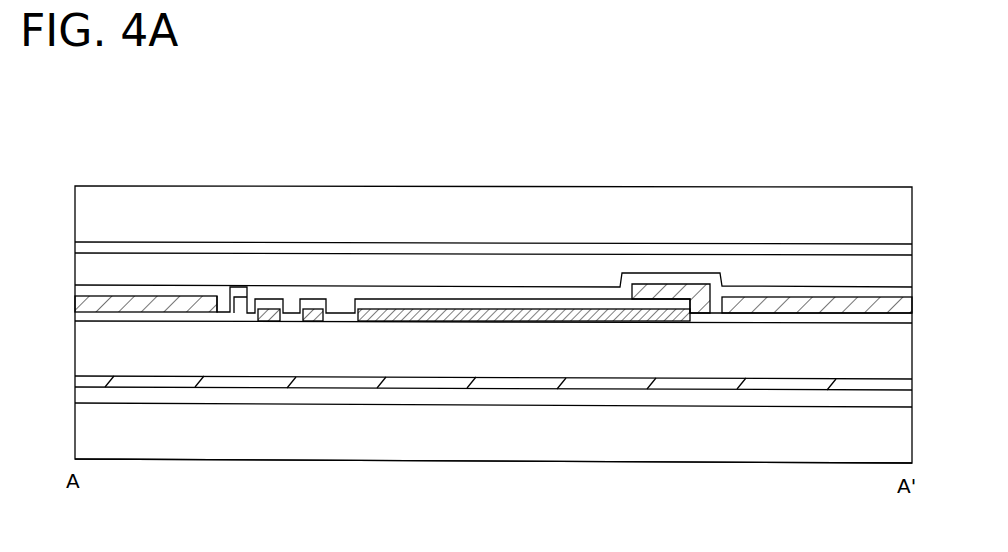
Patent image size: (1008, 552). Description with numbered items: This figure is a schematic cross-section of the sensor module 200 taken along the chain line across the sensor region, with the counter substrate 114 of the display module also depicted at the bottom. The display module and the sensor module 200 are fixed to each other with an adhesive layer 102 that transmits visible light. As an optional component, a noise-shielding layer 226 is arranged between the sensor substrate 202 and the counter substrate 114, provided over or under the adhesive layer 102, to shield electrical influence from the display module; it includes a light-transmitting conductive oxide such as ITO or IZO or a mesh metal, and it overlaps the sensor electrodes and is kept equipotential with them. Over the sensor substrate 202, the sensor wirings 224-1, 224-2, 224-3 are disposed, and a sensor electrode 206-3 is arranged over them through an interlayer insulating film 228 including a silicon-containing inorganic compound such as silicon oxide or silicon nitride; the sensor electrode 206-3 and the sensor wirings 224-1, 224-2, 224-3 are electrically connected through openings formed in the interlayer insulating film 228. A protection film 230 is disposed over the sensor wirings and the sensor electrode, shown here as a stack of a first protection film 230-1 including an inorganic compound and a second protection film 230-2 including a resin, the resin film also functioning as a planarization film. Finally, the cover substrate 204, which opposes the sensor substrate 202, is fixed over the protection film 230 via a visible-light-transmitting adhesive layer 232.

The sensor module 200 is at (68, 186).
The cover substrate 204 is at (896, 219).
The adhesive layer 232 is at (796, 250).
The interlayer insulating film 228 is at (554, 307).
The sensor wiring 224-1 is at (221, 218).
The sensor wiring 224-2 is at (316, 307).
The sensor wiring 224-3 is at (524, 218).
The protection film 230 is at (752, 188).
The first protection film 230-1 is at (623, 273).
The second protection film 230-2 is at (708, 267).
The sensor substrate 202 is at (896, 354).
The sensor electrode 206-3 is at (778, 323).
The noise-shielding layer 226 is at (248, 383).
The adhesive layer 102 is at (138, 395).
The counter substrate 114 is at (858, 447).